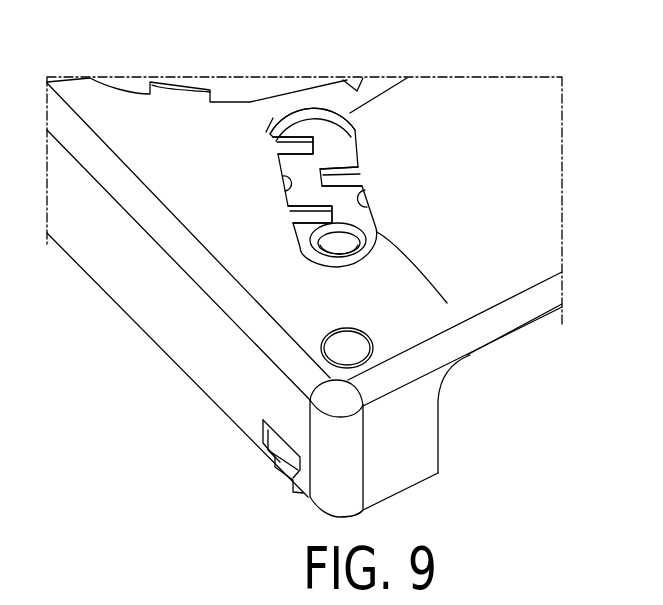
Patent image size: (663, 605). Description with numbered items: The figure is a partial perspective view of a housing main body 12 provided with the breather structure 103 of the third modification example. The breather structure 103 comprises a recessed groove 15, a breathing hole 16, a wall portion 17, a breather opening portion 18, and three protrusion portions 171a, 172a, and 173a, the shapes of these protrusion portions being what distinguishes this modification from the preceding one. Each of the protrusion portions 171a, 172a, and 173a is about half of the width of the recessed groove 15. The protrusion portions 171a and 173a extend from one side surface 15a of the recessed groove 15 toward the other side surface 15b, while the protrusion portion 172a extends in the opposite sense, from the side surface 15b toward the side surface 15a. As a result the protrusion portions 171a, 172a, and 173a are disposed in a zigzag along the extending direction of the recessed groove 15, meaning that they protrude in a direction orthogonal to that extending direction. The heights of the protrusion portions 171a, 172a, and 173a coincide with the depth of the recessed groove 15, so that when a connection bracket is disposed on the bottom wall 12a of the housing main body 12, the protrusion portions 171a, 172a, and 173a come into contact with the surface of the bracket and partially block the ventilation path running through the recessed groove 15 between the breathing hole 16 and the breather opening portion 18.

The housing main body 12 is at (560, 107).
The bottom wall 12a is at (523, 233).
The recessed groove 15 is at (333, 133).
The side surface 15a is at (286, 177).
The side surface 15b is at (367, 185).
The breathing hole 16 is at (337, 257).
The wall portion 17 is at (447, 303).
The breather opening portion 18 is at (312, 113).
The breather structure 103 is at (275, 121).
The protrusion portion 171a is at (300, 212).
The protrusion portion 172a is at (350, 167).
The protrusion portion 173a is at (282, 149).